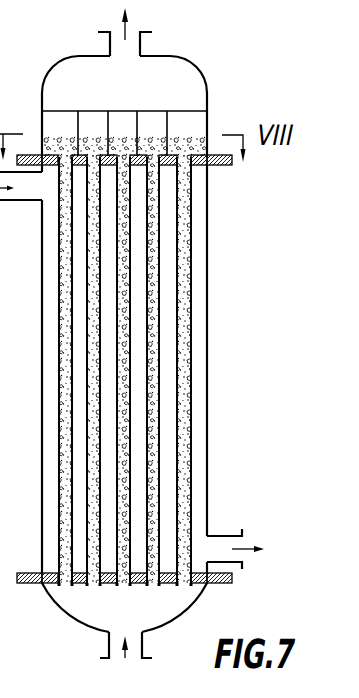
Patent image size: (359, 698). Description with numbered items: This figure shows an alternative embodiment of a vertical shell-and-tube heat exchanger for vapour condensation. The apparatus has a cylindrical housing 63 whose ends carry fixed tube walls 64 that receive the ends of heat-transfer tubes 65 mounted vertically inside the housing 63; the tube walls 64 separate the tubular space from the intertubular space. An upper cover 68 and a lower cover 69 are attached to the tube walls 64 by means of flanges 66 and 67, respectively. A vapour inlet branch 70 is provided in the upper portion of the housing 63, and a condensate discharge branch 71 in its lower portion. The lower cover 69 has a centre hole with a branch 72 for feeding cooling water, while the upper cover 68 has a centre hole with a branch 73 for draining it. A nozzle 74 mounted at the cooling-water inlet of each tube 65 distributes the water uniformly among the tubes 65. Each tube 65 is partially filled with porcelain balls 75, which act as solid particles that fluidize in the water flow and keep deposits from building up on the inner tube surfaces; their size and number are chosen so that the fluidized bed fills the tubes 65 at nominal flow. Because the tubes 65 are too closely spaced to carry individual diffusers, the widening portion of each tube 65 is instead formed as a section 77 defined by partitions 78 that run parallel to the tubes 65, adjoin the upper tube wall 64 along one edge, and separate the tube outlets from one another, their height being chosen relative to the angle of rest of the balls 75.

The cylindrical housing 63 is at (210, 258).
The tube wall 64 is at (220, 166).
The heat-transfer tube 65 is at (190, 470).
The flange 66 is at (221, 166).
The flange 67 is at (209, 584).
The upper cover 68 is at (202, 73).
The lower cover 69 is at (167, 627).
The vapour inlet branch 70 is at (8, 203).
The condensate discharge branch 71 is at (226, 535).
The branch for feeding cooling water 72 is at (108, 641).
The branch for draining cooling water 73 is at (142, 42).
The nozzle 74 is at (62, 585).
The porcelain balls 75 is at (58, 432).
The section 77 is at (188, 123).
The partition 78 is at (107, 127).